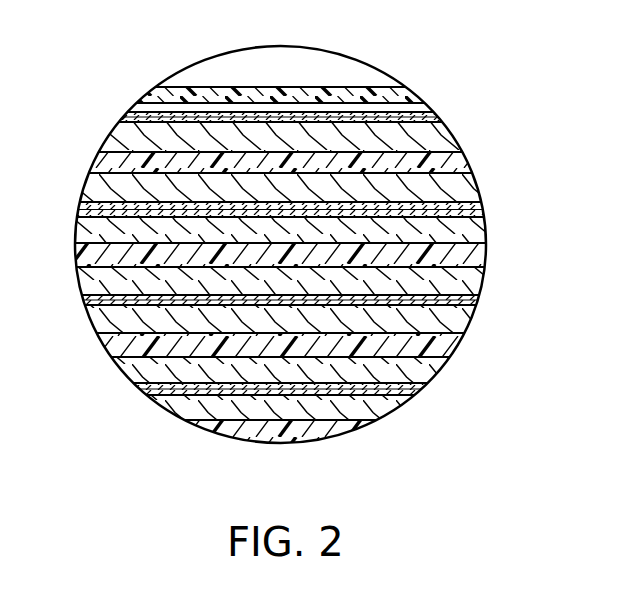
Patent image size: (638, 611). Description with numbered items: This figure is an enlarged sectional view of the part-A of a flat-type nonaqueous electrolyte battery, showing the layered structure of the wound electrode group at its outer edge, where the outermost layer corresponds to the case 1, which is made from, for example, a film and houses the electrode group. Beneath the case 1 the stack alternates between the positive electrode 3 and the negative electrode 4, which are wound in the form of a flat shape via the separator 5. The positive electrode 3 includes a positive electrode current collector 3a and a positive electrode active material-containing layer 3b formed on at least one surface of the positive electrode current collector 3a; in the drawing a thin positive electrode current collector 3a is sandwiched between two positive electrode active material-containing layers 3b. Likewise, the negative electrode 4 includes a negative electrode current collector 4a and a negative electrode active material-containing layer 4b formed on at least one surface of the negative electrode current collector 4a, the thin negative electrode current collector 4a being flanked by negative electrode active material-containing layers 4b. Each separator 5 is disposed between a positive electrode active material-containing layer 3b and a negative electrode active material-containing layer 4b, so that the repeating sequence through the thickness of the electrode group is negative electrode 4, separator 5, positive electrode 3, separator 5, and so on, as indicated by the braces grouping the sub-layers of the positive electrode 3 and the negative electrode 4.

The part- A is at (191, 86).
The case 1 is at (402, 95).
The positive electrode 3 is at (321, 313).
The positive electrode current collector 3a is at (457, 212).
The positive electrode active material-containing layer 3b is at (448, 193).
The negative electrode 4 is at (321, 218).
The negative electrode current collector 4a is at (425, 117).
The negative electrode active material-containing layer 4b is at (425, 138).
The separator 5 is at (113, 165).